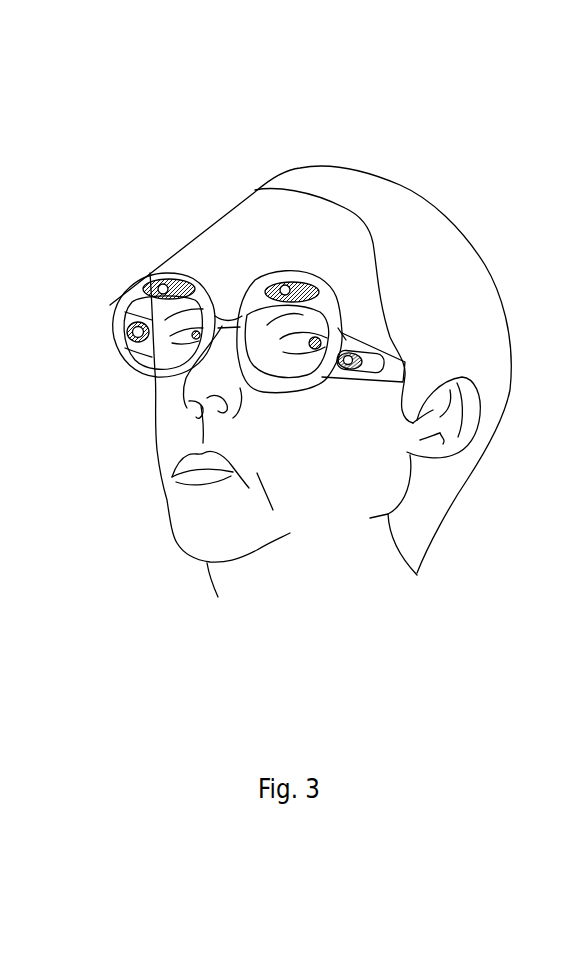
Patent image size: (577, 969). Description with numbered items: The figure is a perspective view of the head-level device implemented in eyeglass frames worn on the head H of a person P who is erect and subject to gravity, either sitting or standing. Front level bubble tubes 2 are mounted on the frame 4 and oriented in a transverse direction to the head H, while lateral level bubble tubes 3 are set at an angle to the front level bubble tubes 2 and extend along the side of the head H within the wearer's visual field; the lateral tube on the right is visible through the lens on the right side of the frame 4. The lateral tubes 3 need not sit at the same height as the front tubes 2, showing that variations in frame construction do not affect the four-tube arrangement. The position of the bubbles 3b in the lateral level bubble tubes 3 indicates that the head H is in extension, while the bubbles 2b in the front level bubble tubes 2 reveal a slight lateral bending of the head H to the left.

The front level bubble tube 2 is at (188, 273).
The bubble 2b is at (152, 273).
The lateral level bubble tube 3 is at (373, 382).
The bubble 3b is at (347, 375).
The frame 4 is at (342, 333).
The head H is at (172, 542).
The person P is at (409, 130).